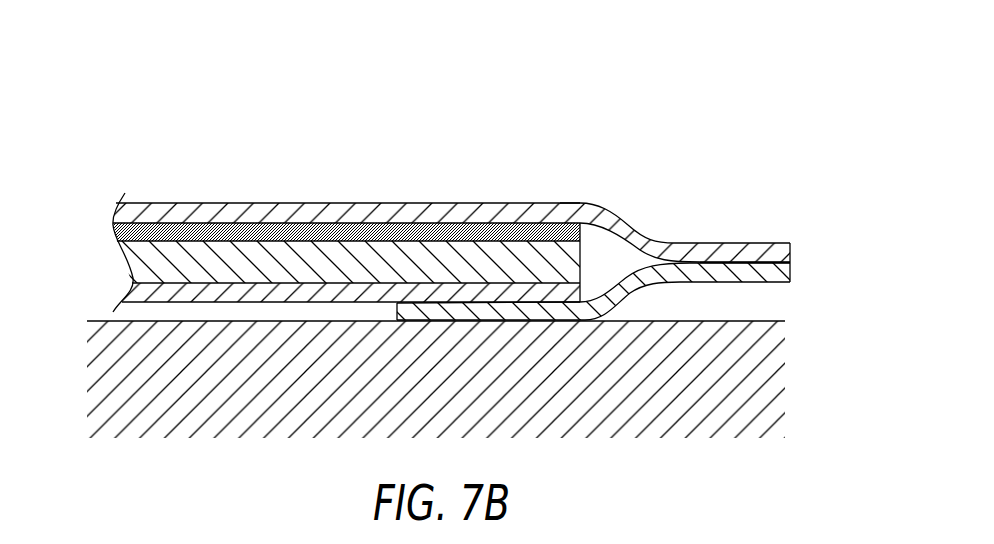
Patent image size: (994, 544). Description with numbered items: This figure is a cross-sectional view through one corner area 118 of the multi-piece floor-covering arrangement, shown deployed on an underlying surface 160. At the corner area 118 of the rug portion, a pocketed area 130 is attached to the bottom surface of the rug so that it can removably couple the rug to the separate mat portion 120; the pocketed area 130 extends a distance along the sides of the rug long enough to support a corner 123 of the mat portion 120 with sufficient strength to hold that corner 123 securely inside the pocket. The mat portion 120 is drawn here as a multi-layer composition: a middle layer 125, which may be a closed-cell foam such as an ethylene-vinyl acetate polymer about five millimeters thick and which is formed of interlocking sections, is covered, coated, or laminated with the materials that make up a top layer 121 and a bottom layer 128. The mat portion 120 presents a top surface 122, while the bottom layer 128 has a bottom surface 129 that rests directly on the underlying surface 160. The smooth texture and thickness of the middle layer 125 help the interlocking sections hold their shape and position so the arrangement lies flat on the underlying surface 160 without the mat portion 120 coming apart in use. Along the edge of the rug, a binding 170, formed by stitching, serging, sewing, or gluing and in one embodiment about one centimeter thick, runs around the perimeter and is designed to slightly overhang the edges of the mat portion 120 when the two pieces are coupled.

The corner area 118 is at (463, 263).
The mat portion 120 is at (597, 266).
The top layer 121 is at (248, 237).
The top surface 122 is at (210, 222).
The corner of the mat portion 123 is at (584, 203).
The middle layer 125 is at (342, 267).
The bottom layer 128 is at (225, 290).
The bottom surface 129 is at (307, 305).
The pocketed area 130 is at (487, 312).
The underlying surface 160 is at (665, 383).
The binding 170 is at (739, 243).